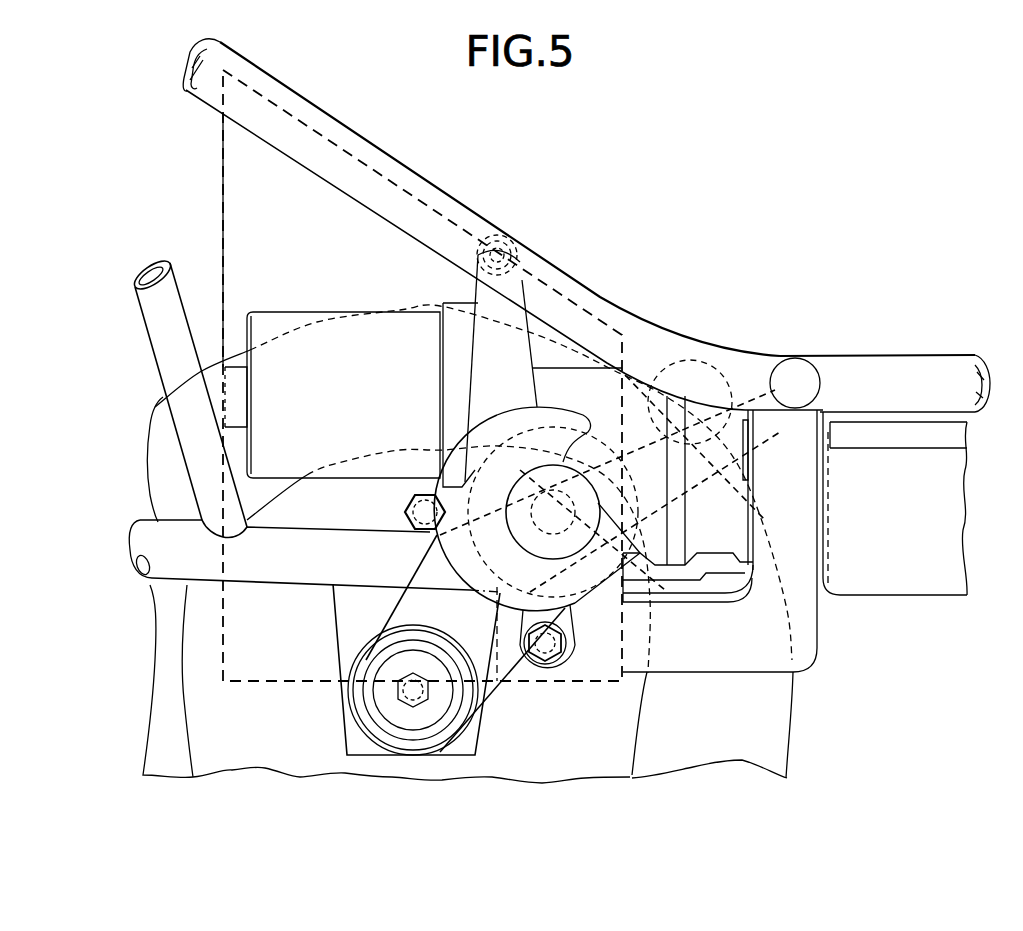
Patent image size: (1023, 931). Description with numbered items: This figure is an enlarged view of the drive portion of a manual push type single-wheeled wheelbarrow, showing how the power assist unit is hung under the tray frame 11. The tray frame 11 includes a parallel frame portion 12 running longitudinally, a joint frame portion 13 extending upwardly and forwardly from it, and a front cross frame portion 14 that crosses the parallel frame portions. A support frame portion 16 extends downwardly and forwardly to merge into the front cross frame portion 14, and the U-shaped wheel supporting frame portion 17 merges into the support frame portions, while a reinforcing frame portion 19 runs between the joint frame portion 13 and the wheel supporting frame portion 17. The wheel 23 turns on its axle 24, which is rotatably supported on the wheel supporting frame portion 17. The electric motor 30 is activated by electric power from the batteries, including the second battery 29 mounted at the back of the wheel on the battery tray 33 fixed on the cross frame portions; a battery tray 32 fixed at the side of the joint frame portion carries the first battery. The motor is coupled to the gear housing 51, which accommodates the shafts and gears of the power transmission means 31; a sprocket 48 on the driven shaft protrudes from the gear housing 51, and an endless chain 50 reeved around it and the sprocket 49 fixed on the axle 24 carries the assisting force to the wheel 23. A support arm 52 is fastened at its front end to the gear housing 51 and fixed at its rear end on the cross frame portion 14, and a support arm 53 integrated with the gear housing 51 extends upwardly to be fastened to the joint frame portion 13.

The tray frame 11 is at (893, 347).
The parallel frame portion 12 is at (945, 365).
The joint frame portion 13 is at (462, 205).
The front cross frame portion 14 is at (757, 358).
The support frame portion 16 is at (675, 355).
The wheel supporting frame portion 17 is at (313, 573).
The reinforcing frame portion 19 is at (173, 327).
The wheel 23 is at (778, 735).
The axle 24 is at (427, 705).
The second battery 29 is at (893, 432).
The electric motor 30 is at (326, 406).
The power transmission means 31 is at (502, 704).
The battery tray 32 is at (248, 192).
The battery tray 33 is at (908, 597).
The sprocket 48 is at (500, 407).
The sprocket 49 is at (363, 727).
The endless chain 50 is at (422, 568).
The gear housing 51 is at (568, 370).
The support arm 52 is at (705, 658).
The support arm 53 is at (478, 330).